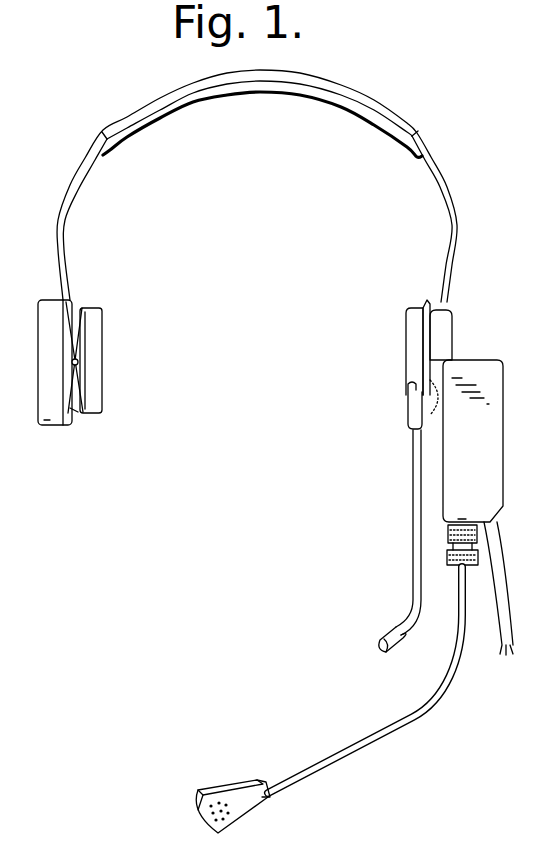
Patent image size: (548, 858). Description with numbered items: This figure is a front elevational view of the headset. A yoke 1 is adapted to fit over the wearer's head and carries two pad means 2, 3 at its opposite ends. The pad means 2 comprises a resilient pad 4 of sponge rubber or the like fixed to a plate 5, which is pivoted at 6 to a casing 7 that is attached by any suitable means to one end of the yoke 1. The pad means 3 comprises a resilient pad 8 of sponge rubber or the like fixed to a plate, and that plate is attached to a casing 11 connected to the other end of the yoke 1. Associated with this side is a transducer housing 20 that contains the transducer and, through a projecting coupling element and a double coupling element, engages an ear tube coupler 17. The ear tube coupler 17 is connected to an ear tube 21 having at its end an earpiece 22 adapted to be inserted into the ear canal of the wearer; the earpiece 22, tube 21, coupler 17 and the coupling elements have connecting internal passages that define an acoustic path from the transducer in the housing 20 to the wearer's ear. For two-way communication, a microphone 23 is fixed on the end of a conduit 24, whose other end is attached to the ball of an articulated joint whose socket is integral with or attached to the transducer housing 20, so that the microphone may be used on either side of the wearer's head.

The yoke 1 is at (77, 187).
The pad means 2 is at (88, 283).
The pad means 3 is at (415, 278).
The resilient pad 4 is at (98, 388).
The plate 5 is at (78, 413).
The pivot 6 is at (82, 356).
The casing 7 is at (47, 367).
The resilient pad 8 is at (405, 338).
The casing 11 is at (445, 337).
The ear tube coupler 17 is at (410, 410).
The transducer housing 20 is at (488, 432).
The ear tube 21 is at (413, 492).
The earpiece 22 is at (403, 620).
The microphone 23 is at (225, 758).
The conduit 24 is at (308, 778).